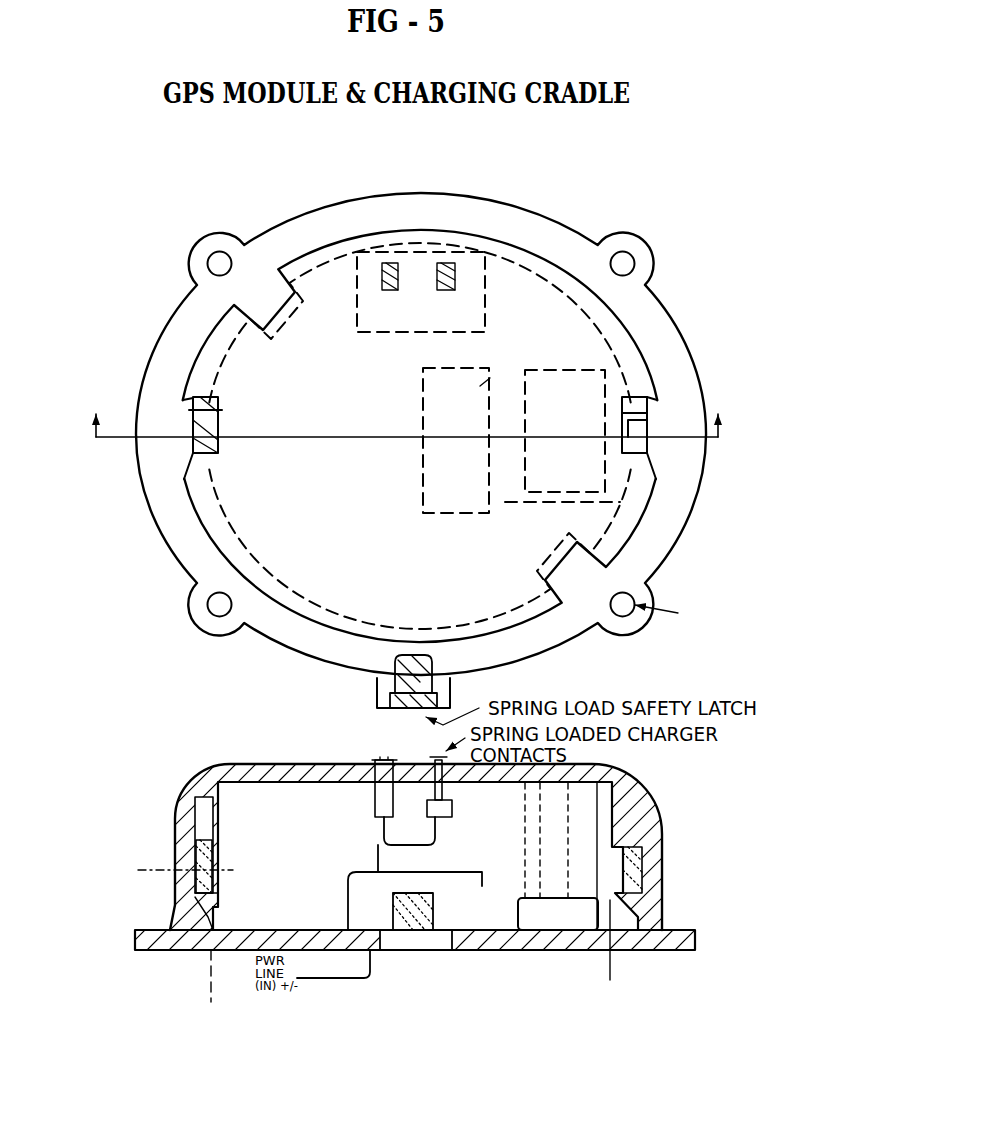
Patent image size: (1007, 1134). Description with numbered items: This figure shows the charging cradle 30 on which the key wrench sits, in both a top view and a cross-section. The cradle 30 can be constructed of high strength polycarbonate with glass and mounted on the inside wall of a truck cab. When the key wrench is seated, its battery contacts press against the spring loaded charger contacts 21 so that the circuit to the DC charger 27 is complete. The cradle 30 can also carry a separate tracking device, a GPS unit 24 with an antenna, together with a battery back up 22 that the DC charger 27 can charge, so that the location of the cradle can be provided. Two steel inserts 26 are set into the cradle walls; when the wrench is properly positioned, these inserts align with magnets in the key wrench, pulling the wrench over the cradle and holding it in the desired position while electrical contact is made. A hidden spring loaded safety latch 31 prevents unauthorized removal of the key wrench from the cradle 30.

The spring loaded charger contacts 21 is at (412, 790).
The battery back up 22 is at (444, 649).
The GPS unit 24 is at (562, 650).
The steel inserts 26 is at (224, 421).
The DC charger 27 is at (432, 591).
The charging cradle 30 is at (668, 811).
The safety latch 31 is at (448, 997).